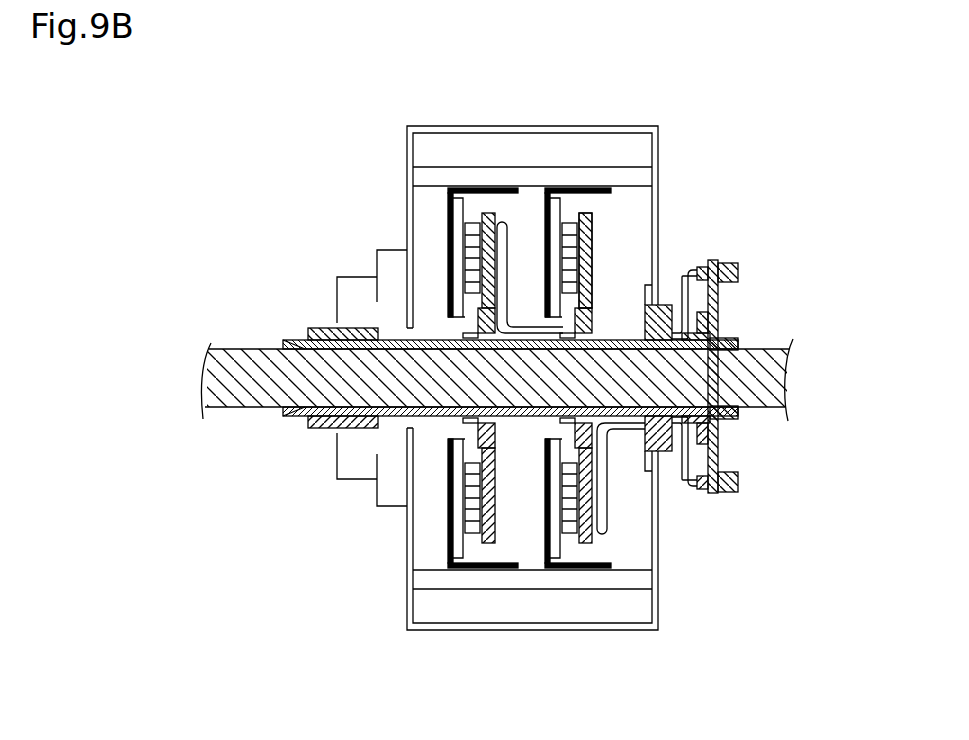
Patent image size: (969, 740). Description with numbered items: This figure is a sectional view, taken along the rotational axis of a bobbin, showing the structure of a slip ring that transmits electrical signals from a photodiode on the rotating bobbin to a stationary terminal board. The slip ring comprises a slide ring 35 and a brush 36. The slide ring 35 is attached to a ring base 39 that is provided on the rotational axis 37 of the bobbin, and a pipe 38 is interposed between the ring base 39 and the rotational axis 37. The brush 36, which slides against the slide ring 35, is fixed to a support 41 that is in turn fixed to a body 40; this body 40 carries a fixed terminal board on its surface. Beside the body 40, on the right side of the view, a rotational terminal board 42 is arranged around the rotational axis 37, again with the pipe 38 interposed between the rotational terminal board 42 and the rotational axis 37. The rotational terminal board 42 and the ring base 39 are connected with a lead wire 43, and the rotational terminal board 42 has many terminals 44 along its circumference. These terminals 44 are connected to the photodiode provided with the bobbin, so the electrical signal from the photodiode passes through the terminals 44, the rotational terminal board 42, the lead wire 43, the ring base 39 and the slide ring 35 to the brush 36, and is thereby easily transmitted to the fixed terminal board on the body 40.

The slide ring 35 is at (575, 212).
The brush 36 is at (568, 222).
The rotational axis 37 is at (257, 408).
The pipe 38 is at (290, 340).
The ring base 39 is at (597, 242).
The body 40 is at (407, 175).
The support 41 is at (482, 177).
The rotational terminal board 42 is at (720, 443).
The lead wire 43 is at (617, 432).
The terminals 44 is at (738, 262).